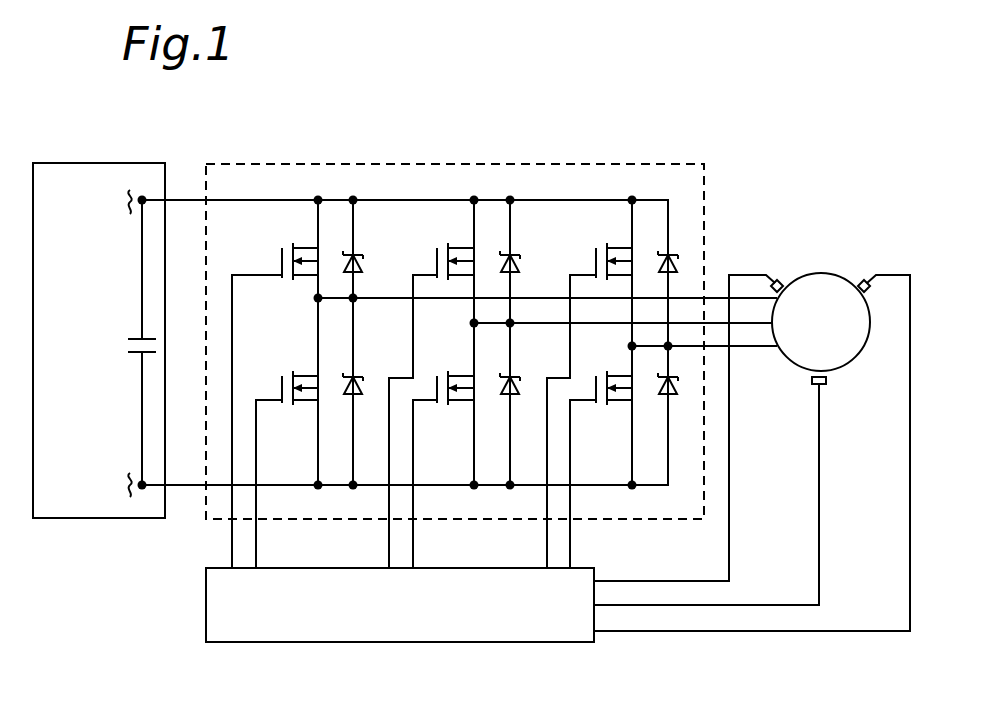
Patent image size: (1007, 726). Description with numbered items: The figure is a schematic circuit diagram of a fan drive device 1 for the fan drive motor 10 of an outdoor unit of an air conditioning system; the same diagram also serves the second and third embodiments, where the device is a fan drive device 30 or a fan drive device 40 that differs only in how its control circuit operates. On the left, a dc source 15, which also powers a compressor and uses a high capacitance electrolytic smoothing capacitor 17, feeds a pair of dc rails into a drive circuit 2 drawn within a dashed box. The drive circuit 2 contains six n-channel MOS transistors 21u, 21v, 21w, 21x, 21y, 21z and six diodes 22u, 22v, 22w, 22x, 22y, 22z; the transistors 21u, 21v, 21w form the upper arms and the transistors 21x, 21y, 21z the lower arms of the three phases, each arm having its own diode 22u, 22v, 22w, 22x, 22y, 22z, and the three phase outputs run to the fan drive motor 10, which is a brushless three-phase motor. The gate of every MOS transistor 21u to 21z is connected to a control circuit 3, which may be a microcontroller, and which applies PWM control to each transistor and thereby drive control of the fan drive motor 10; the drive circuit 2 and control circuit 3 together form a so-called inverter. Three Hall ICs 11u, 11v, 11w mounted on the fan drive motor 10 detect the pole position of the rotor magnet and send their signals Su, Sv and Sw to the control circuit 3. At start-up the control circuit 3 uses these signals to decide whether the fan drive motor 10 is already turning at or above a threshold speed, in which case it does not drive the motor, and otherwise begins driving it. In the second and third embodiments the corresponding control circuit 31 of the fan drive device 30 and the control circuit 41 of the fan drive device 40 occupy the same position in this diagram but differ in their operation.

The fan drive device 1 is at (524, 388).
The fan drive device 30 is at (524, 388).
The fan drive device 40 is at (733, 185).
The drive circuit 2 is at (474, 163).
The control circuit 3 is at (558, 479).
The control circuit 31 is at (558, 479).
The control circuit 41 is at (389, 642).
The fan drive motor 10 is at (847, 367).
The Hall IC 11u is at (779, 280).
The Hall IC 11v is at (810, 380).
The Hall IC 11w is at (863, 280).
The dc source 15 is at (126, 308).
The smoothing capacitor 17 is at (135, 356).
The n-channel MOS transistor 21u is at (275, 261).
The n-channel MOS transistor 21v is at (448, 243).
The n-channel MOS transistor 21w is at (607, 243).
The n-channel MOS transistor 21x is at (278, 380).
The n-channel MOS transistor 21y is at (447, 377).
The n-channel MOS transistor 21z is at (600, 405).
The diode 22u is at (363, 266).
The diode 22v is at (520, 266).
The diode 22w is at (682, 262).
The diode 22x is at (366, 388).
The diode 22y is at (520, 388).
The diode 22z is at (670, 397).